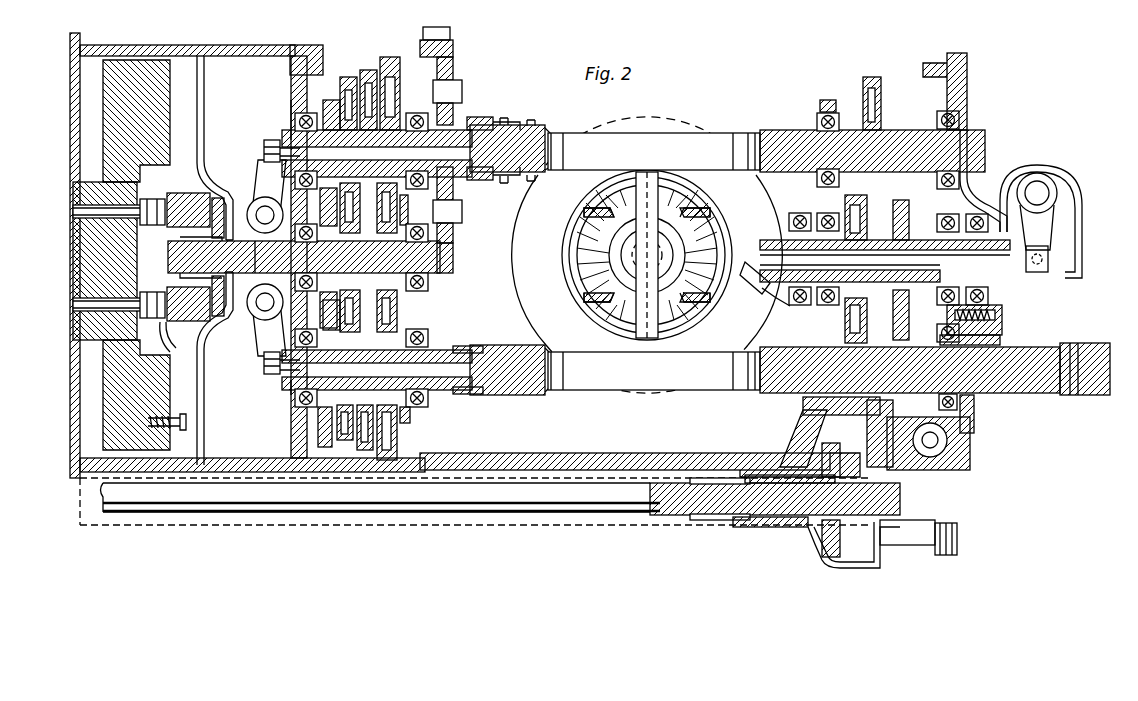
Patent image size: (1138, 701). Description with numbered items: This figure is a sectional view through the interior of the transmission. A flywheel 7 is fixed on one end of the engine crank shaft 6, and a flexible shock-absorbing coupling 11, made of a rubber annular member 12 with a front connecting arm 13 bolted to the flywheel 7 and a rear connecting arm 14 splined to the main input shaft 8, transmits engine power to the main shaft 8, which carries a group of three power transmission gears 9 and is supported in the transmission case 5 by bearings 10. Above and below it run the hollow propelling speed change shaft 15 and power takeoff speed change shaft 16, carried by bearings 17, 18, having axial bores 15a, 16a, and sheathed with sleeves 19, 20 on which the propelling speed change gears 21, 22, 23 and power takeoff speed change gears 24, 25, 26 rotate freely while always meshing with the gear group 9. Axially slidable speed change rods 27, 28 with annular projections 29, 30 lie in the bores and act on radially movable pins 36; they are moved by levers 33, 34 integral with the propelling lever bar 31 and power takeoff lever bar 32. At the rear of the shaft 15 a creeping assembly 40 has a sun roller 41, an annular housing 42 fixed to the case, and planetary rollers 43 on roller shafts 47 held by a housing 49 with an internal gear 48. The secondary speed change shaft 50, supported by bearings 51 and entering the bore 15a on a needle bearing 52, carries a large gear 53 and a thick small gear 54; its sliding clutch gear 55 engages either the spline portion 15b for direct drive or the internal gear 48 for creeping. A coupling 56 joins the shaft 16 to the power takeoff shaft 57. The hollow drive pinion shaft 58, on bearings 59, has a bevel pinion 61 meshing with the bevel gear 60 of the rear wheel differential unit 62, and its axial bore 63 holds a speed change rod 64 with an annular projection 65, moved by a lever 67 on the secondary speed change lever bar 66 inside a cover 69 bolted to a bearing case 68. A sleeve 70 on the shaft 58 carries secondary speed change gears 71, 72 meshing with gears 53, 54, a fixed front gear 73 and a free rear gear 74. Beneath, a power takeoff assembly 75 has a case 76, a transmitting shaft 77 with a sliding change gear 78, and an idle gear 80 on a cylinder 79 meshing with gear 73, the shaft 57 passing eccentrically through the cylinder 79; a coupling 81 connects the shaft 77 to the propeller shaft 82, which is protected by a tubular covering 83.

The transmission case 5 is at (536, 476).
The crank shaft 6 is at (92, 340).
The flywheel 7 is at (112, 133).
The main input shaft 8 is at (172, 267).
The power transmission gears 9 is at (338, 290).
The bearings 10 is at (304, 278).
The flexible shock-absorbing coupling 11 is at (216, 196).
The annular member 12 is at (165, 228).
The front connecting arm 13 is at (176, 346).
The rear connecting arm 14 is at (225, 197).
The propelling speed change shaft 15 is at (290, 140).
The axial bore 15a is at (266, 148).
The spline portion 15b is at (470, 132).
The power takeoff speed change shaft 16 is at (290, 386).
The axial bore 16a is at (458, 394).
The bearings 17 is at (294, 118).
The bearings 18 is at (300, 410).
The sleeve 19 is at (334, 188).
The sleeve 20 is at (318, 410).
The propelling speed change gear 21 is at (392, 58).
The propelling speed change gear 22 is at (368, 71).
The propelling speed change gear 23 is at (348, 78).
The power takeoff speed change gear 24 is at (388, 462).
The power takeoff speed change gear 25 is at (365, 452).
The power takeoff speed change gear 26 is at (344, 442).
The propelling speed change rod 27 is at (266, 210).
The power takeoff speed change rod 28 is at (268, 372).
The annular projection 29 is at (361, 208).
The annular projection 30 is at (398, 416).
The propelling lever bar 31 is at (269, 257).
The power takeoff lever bar 32 is at (263, 306).
The lever 33 is at (264, 176).
The lever 34 is at (262, 345).
The pins 36 is at (342, 124).
The creeping assembly 40 is at (467, 66).
The sun roller 41 is at (455, 200).
The annular housing 42 is at (455, 262).
The planetary rollers 43 is at (455, 240).
The roller shafts 47 is at (462, 216).
The internal gear 48 is at (484, 182).
The housing 49 is at (500, 124).
The secondary speed change shaft 50 is at (720, 133).
The bearings 51 is at (816, 120).
The needle bearing 52 is at (416, 151).
The large gear 53 is at (872, 80).
The small gear 54 is at (906, 128).
The clutch gear 55 is at (530, 126).
The coupling 56 is at (468, 346).
The power takeoff shaft 57 is at (590, 390).
The drive pinion shaft 58 is at (806, 212).
The bearings 59 is at (976, 200).
The bevel gear 60 is at (712, 205).
The bevel pinion 61 is at (760, 292).
The rear wheel differential unit 62 is at (506, 293).
The axial bore 63 is at (745, 260).
The speed change rod 64 is at (1014, 268).
The annular projection 65 is at (910, 315).
The secondary speed change lever bar 66 is at (1037, 188).
The lever 67 is at (1056, 222).
The bearing case 68 is at (1002, 334).
The cover 69 is at (1076, 280).
The sleeve 70 is at (845, 290).
The secondary speed change gear 71 is at (864, 320).
The secondary speed change gear 72 is at (892, 340).
The front gear 73 is at (855, 212).
The rear gear 74 is at (905, 225).
The power takeoff assembly 75 is at (806, 562).
The case 76 is at (872, 556).
The transmitting shaft 77 is at (780, 517).
The change gear 78 is at (832, 558).
The cylinder 79 is at (803, 404).
The idle gear 80 is at (880, 430).
The coupling 81 is at (702, 520).
The propeller shaft 82 is at (562, 512).
The tubular covering 83 is at (620, 512).